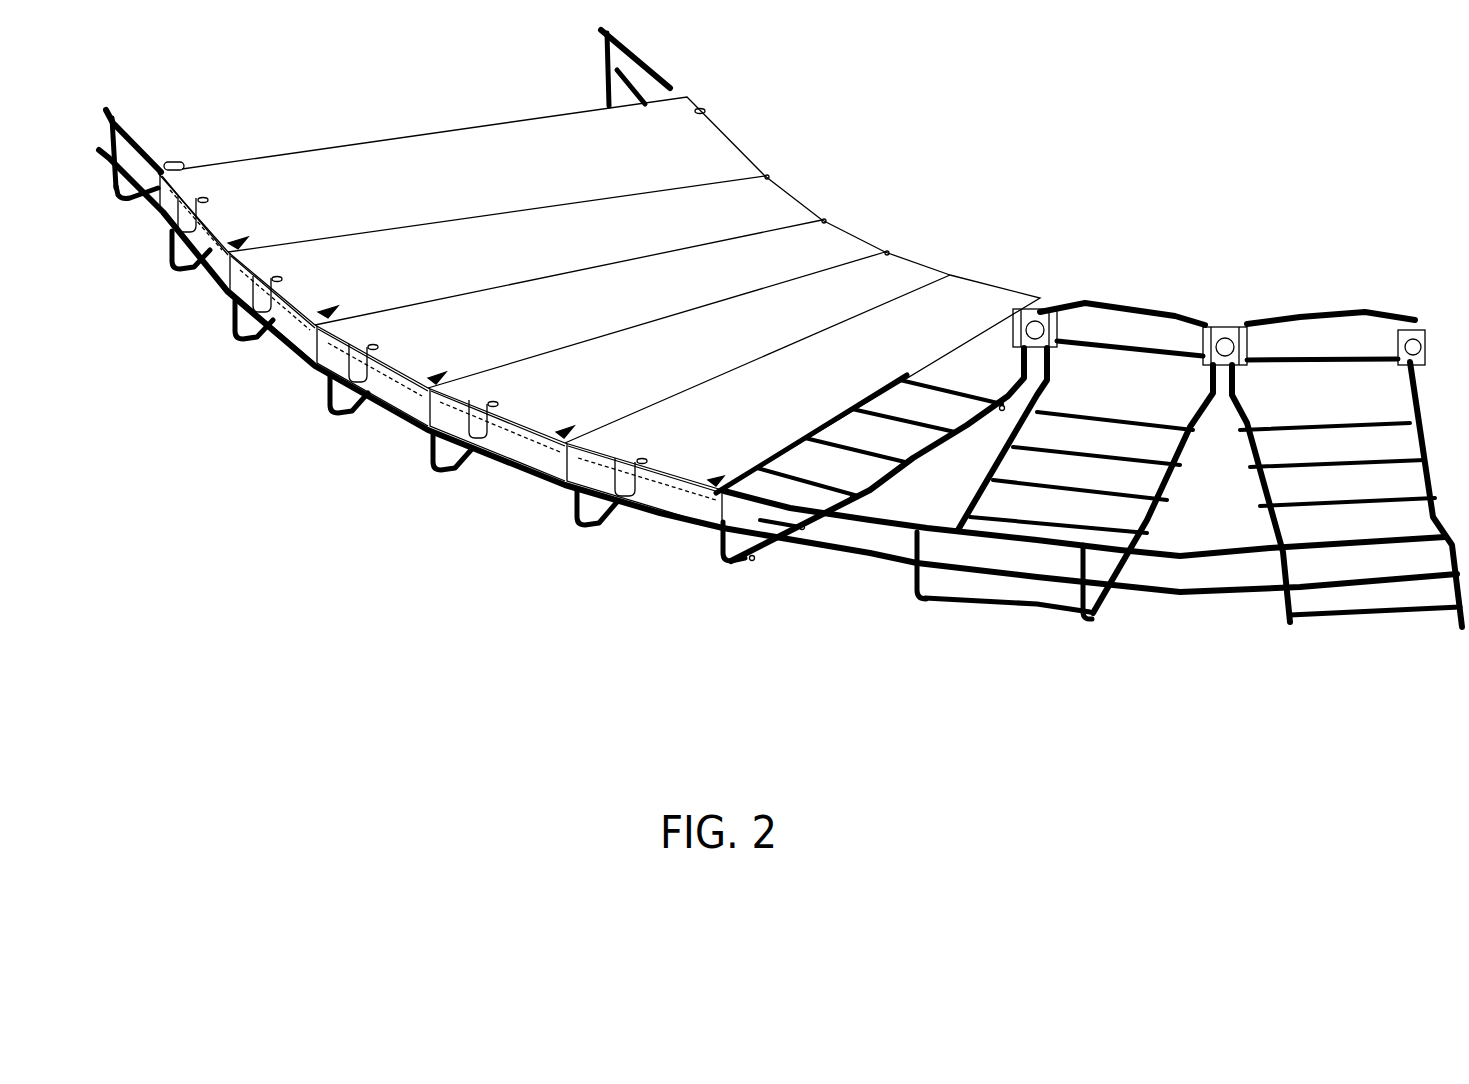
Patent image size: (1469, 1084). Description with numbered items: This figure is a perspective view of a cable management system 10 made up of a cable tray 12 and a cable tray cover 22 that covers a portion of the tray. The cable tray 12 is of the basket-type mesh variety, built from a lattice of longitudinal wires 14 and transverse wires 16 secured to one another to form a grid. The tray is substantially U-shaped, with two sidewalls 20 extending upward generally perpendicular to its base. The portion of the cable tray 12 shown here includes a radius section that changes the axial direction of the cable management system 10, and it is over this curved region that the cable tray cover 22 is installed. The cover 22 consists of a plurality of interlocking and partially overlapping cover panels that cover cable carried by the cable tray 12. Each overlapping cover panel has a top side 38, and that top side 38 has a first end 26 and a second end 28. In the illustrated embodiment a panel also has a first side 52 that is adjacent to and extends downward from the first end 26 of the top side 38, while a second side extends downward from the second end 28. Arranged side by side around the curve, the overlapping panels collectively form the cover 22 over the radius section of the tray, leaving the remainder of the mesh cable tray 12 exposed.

The cable management system 10 is at (357, 663).
The cable tray 12 is at (835, 553).
The longitudinal wires 14 is at (1158, 426).
The transverse wires 16 is at (1247, 457).
The sidewalls 20 is at (1132, 306).
The cable tray cover 22 is at (352, 484).
The first end 26 is at (537, 423).
The second end 28 is at (990, 297).
The top side 38 is at (646, 298).
The first side 52 is at (661, 502).